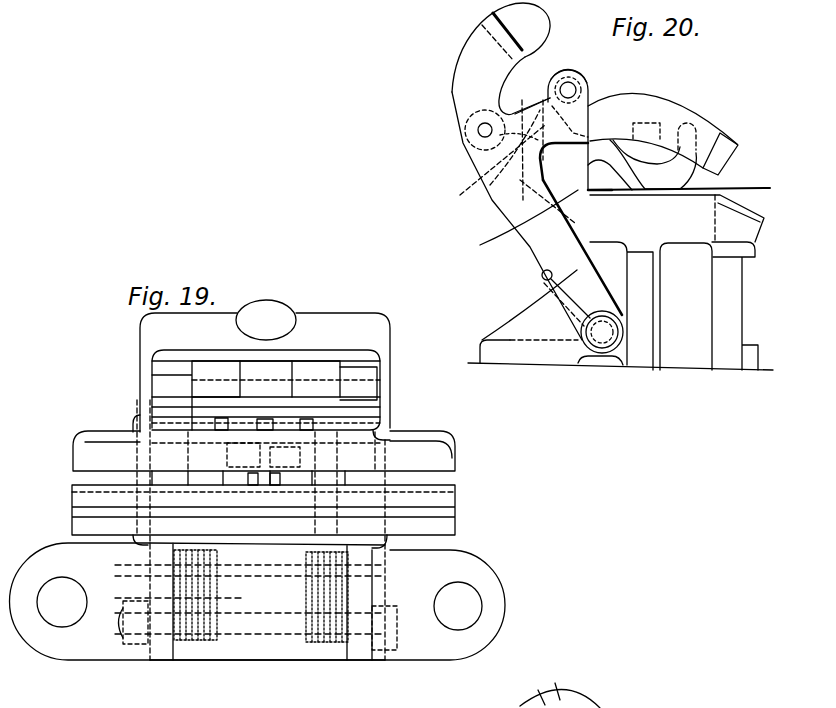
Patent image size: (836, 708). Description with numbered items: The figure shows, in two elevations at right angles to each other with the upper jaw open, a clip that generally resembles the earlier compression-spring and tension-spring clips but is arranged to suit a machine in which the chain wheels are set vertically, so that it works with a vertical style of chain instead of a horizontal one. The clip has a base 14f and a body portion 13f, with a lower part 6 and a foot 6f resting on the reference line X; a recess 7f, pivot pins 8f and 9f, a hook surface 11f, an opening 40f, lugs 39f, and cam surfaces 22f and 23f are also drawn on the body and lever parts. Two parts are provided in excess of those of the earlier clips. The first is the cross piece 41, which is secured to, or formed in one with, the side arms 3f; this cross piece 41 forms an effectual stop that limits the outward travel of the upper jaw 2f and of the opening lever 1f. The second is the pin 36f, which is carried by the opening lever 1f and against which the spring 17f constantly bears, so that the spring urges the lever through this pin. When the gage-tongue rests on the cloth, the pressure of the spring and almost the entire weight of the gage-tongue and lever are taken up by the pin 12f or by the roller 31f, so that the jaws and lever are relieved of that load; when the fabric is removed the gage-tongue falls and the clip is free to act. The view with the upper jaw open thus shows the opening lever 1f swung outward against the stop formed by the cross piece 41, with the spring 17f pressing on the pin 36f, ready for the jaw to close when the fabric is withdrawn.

In FIG. 19, the opening lever 1f is at (265, 366).
In FIG. 20, the opening lever 1f is at (513, 58).
In FIG. 19, the upper jaw 2f is at (88, 453).
In FIG. 20, the upper jaw 2f is at (726, 158).
In FIG. 19, the side arms 3f is at (140, 400).
In FIG. 20, the side arms 3f is at (622, 112).
In FIG. 19, the cross bar 6 is at (307, 482).
In FIG. 20, the foot lobe 6f is at (653, 164).
In FIG. 20, the recess 7f is at (616, 157).
In FIG. 19, the pivot pin 8f is at (133, 420).
In FIG. 20, the pivot pin 8f is at (478, 131).
In FIG. 19, the pivot pin 9f is at (288, 625).
In FIG. 20, the pivot pin 9f is at (605, 328).
In FIG. 19, the hook inner surface 11f is at (294, 396).
In FIG. 20, the hook inner surface 11f is at (528, 108).
In FIG. 19, the pin 12f is at (266, 381).
In FIG. 20, the pin 12f is at (577, 90).
In FIG. 20, the lever 13f is at (537, 216).
In FIG. 19, the base 14f is at (143, 574).
In FIG. 20, the base 14f is at (620, 282).
In FIG. 19, the spring 17f is at (306, 598).
In FIG. 20, the spring 17f is at (541, 278).
In FIG. 20, the cam surface 22f is at (495, 188).
In FIG. 20, the cam surface 23f is at (503, 167).
In FIG. 19, the roller 31f is at (337, 390).
In FIG. 20, the roller 31f is at (590, 60).
In FIG. 19, the pin 36f is at (252, 631).
In FIG. 20, the pin 36f is at (566, 290).
In FIG. 19, the lug 39f is at (205, 425).
In FIG. 20, the opening 40f is at (557, 107).
In FIG. 19, the cross piece 41 is at (207, 412).
In FIG. 20, the cross piece 41 is at (665, 125).
In FIG. 20, the reference line X is at (747, 190).